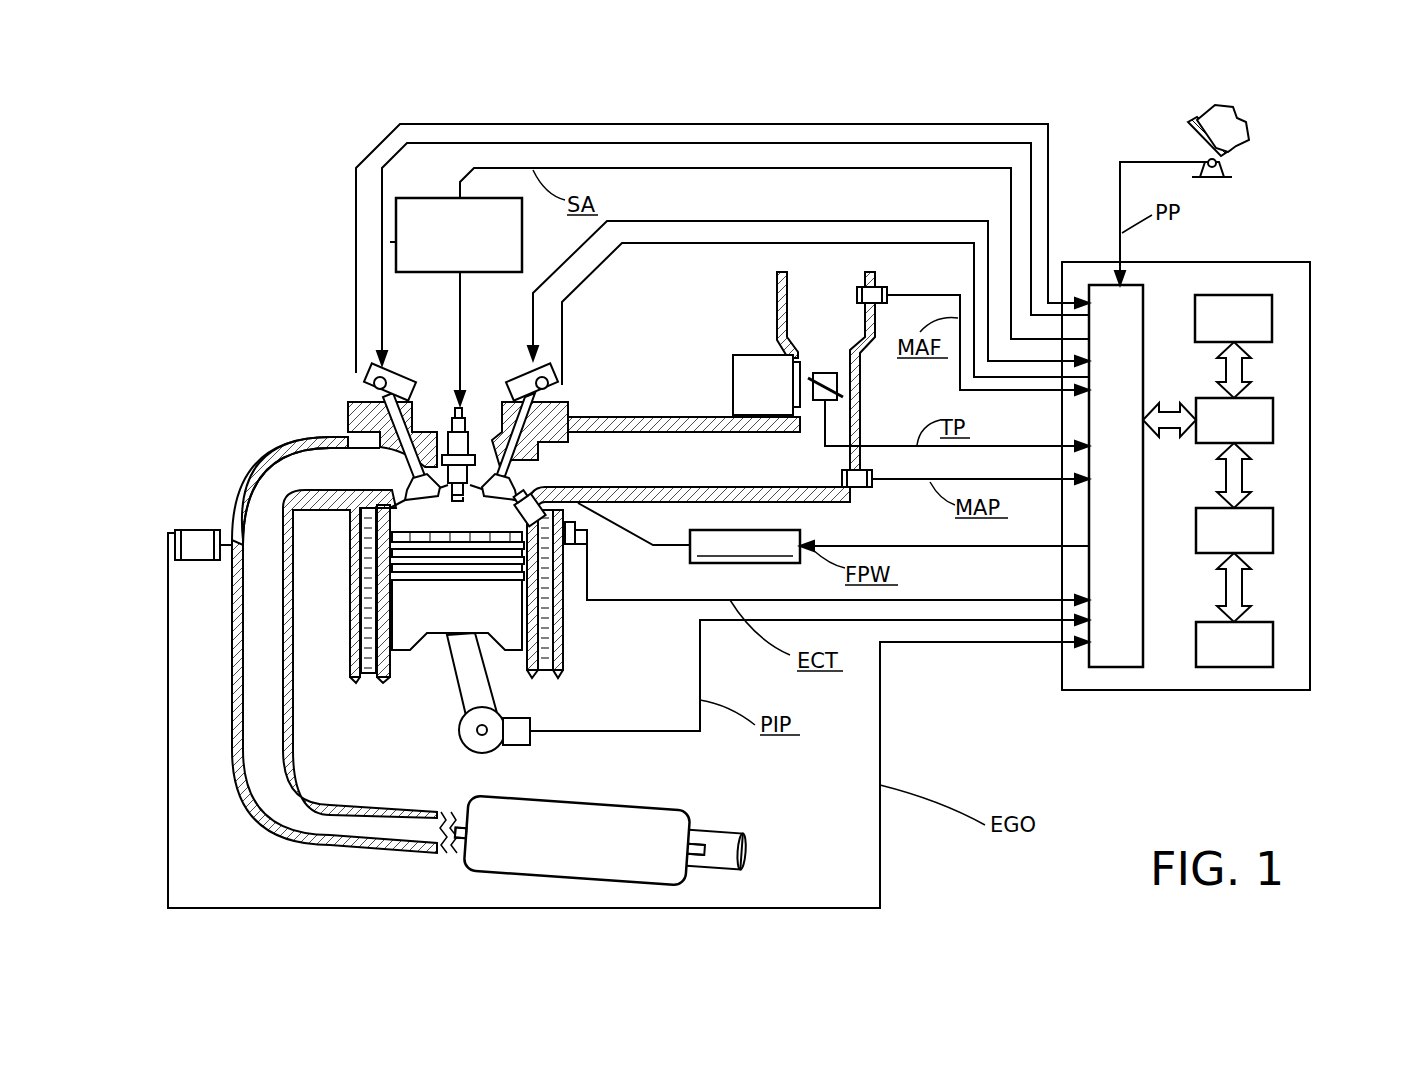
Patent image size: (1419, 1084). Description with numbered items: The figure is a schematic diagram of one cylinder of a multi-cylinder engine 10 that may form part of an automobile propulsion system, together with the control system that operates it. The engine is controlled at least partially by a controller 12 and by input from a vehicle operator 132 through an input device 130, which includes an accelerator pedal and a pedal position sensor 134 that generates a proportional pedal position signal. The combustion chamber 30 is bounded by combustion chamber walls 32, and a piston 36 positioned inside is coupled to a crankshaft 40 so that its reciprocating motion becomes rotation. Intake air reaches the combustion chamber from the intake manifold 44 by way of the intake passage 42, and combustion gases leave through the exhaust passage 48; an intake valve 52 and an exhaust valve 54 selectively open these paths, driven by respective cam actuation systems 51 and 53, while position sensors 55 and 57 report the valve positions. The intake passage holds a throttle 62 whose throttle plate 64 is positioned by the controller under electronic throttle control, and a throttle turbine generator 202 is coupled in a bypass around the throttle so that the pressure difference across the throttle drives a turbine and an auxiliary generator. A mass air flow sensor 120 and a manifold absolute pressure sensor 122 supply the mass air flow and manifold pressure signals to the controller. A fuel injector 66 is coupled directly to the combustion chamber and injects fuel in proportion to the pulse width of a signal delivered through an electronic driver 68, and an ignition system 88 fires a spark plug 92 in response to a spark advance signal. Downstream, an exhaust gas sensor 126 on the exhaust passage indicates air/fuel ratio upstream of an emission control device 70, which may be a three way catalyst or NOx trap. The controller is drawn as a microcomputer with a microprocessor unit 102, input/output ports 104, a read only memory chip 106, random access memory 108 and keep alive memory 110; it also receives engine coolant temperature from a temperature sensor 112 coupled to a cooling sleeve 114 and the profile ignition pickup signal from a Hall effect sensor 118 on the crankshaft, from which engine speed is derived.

The engine 10 is at (275, 348).
The controller 12 is at (1310, 262).
The combustion chamber 30 is at (455, 510).
The combustion chamber walls 32 is at (393, 655).
The piston 36 is at (438, 618).
The crankshaft 40 is at (470, 748).
The intake passage 42 is at (838, 329).
The intake manifold 44 is at (768, 479).
The exhaust passage 48 is at (328, 484).
The cam actuation system 51 is at (528, 365).
The intake valve 52 is at (505, 470).
The cam actuation system 53 is at (395, 367).
The exhaust valve 54 is at (398, 466).
The position sensor 55 is at (555, 386).
The position sensor 57 is at (368, 380).
The throttle 62 is at (838, 390).
The throttle plate 64 is at (848, 361).
The fuel injector 66 is at (575, 512).
The electronic driver 68 is at (718, 563).
The emission control device 70 is at (657, 805).
The ignition system 88 is at (412, 200).
The spark plug 92 is at (465, 410).
The microprocessor unit 102 is at (1273, 420).
The input/output ports 104 is at (1143, 297).
The read only memory chip 106 is at (1272, 315).
The random access memory 108 is at (1273, 530).
The keep alive memory 110 is at (1273, 642).
The temperature sensor 112 is at (577, 545).
The cooling sleeve 114 is at (543, 620).
The Hall effect sensor 118 is at (517, 745).
The mass air flow sensor 120 is at (947, 276).
The manifold absolute pressure sensor 122 is at (932, 524).
The exhaust gas sensor 126 is at (175, 533).
The input device 130 is at (1193, 135).
The vehicle operator 132 is at (1245, 122).
The pedal position sensor 134 is at (1232, 168).
The throttle turbine generator 202 is at (783, 399).